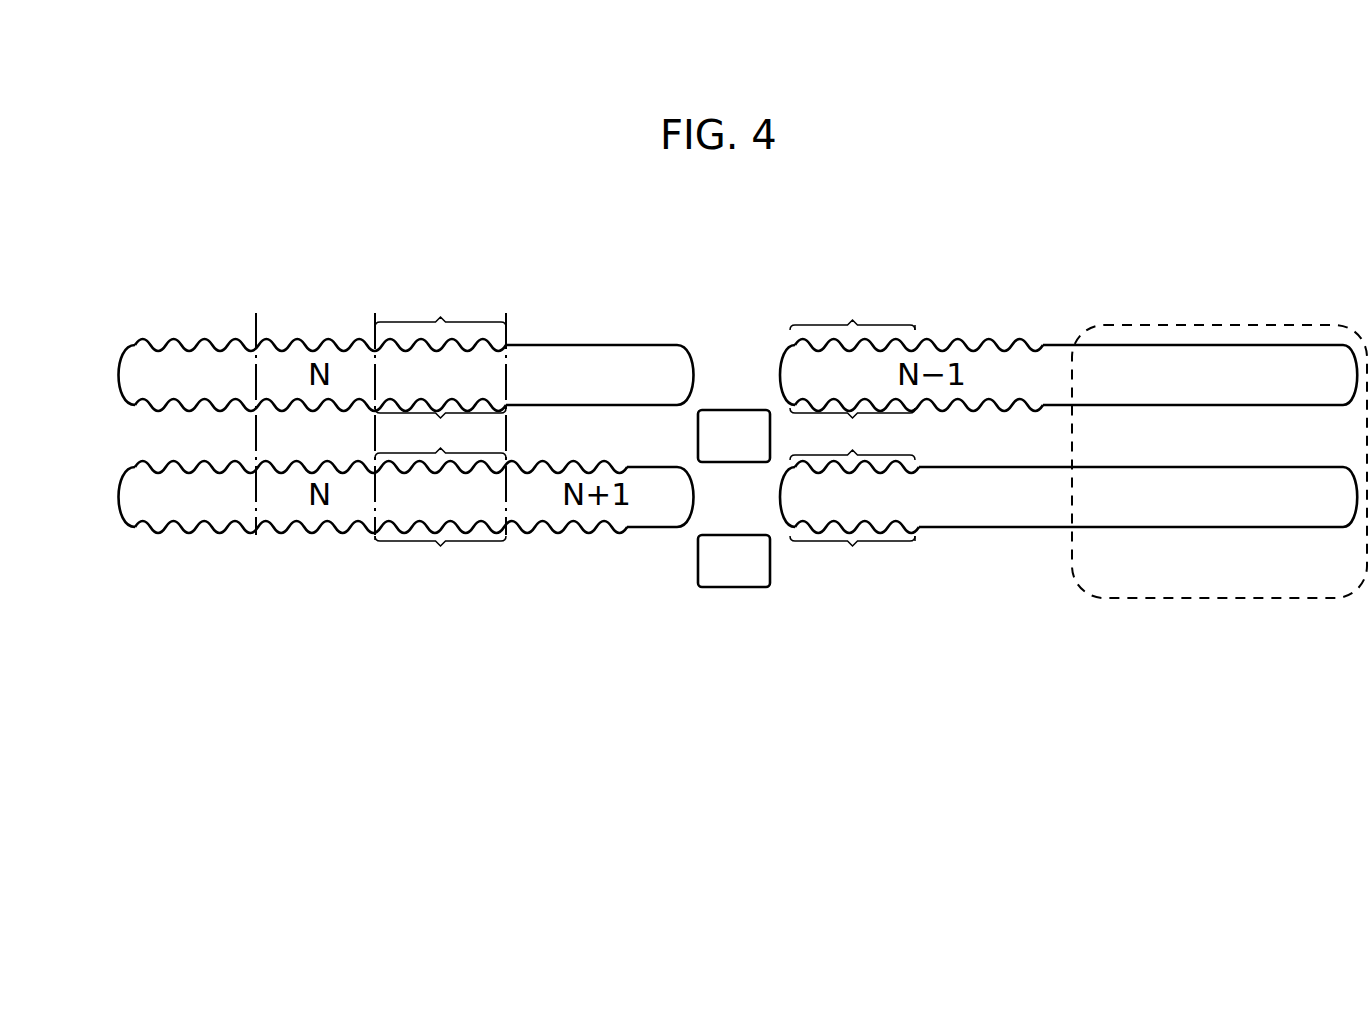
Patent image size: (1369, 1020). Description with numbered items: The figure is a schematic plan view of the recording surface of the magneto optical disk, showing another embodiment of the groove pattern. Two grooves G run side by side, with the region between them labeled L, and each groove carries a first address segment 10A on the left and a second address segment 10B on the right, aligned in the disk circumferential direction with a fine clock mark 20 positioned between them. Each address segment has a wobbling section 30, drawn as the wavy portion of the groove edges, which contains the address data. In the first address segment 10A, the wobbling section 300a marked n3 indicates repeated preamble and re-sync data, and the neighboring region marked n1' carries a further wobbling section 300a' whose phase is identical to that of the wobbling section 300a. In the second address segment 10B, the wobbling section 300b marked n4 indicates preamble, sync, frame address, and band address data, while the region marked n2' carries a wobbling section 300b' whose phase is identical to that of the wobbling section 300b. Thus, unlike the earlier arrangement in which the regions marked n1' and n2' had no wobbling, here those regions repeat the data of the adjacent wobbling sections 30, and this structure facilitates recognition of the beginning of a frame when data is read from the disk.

The first address segment 10A is at (650, 358).
The second address segment 10B is at (1052, 357).
The fine clock mark 20 is at (735, 577).
The wobbling section 30 is at (557, 532).
The wobbling section 300a is at (440, 501).
The wobbling section 300a' is at (498, 409).
The wobbling section 300b is at (852, 370).
The wobbling section 300b' is at (896, 505).
The region of the first address segment n1' is at (591, 310).
The region of the second address segment n2' is at (950, 586).
The region marking wobbling section 300a n3 is at (390, 550).
The region marking wobbling section 300b n4 is at (908, 316).
The groove G is at (108, 364).
The line L is at (108, 431).